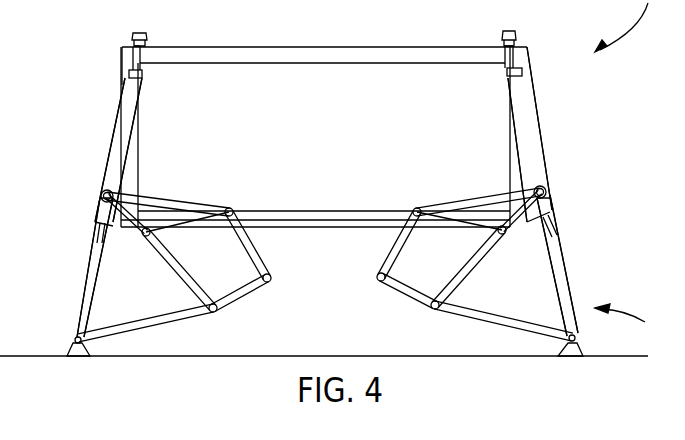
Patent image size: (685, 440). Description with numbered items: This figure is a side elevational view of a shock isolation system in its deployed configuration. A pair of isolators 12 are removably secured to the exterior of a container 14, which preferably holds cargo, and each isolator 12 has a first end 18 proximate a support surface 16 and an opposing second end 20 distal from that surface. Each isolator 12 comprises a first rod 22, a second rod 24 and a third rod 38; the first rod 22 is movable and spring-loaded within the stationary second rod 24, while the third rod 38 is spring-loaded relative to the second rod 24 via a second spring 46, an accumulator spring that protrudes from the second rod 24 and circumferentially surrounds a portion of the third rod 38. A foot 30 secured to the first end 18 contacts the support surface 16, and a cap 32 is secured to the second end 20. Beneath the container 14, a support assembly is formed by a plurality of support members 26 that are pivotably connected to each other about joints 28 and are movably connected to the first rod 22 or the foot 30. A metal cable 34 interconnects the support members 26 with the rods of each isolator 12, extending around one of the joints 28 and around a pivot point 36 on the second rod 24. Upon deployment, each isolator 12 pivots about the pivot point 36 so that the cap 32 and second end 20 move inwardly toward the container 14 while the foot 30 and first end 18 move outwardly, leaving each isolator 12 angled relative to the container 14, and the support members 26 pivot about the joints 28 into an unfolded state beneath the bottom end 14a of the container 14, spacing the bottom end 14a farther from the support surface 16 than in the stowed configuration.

The isolator 12 is at (117, 135).
The container 14 is at (313, 152).
The bottom end of the container 14a is at (325, 229).
The support surface 16 is at (196, 357).
The first end of the isolator 18 is at (626, 319).
The second end of the isolator 20 is at (634, 26).
The first rod 22 is at (84, 300).
The second rod 24 is at (112, 163).
The support member 26 is at (238, 285).
The joint 28 is at (231, 208).
The foot 30 is at (74, 350).
The cap 32 is at (132, 34).
The metal cable 34 is at (168, 196).
The pivot point 36 is at (101, 194).
The third rod 38 is at (133, 50).
The second spring 46 is at (130, 73).